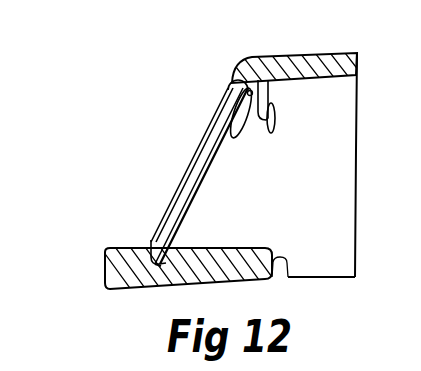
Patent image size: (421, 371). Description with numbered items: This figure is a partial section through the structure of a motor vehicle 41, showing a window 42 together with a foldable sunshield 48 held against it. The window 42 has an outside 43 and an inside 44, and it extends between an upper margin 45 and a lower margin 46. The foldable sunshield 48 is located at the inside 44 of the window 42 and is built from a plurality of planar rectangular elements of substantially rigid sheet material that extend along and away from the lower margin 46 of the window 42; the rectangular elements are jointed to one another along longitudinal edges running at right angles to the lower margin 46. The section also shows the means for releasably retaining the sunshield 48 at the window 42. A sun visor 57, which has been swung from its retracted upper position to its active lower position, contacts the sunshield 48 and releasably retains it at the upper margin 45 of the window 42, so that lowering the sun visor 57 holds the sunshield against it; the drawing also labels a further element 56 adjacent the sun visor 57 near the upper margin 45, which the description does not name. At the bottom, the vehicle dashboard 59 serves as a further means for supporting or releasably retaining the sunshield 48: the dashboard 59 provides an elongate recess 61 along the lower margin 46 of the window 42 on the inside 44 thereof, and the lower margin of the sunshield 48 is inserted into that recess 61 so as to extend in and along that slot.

The motor vehicle 41 is at (98, 265).
The window 42 is at (192, 200).
The outside 43 is at (195, 166).
The inside 44 is at (180, 212).
The upper margin 45 is at (232, 84).
The lower margin 46 is at (157, 238).
The foldable sunshield 48 is at (201, 184).
The bracket 56 is at (277, 118).
The sun visor 57 is at (250, 135).
The vehicle dashboard 59 is at (287, 278).
The elongate recess 61 is at (160, 268).